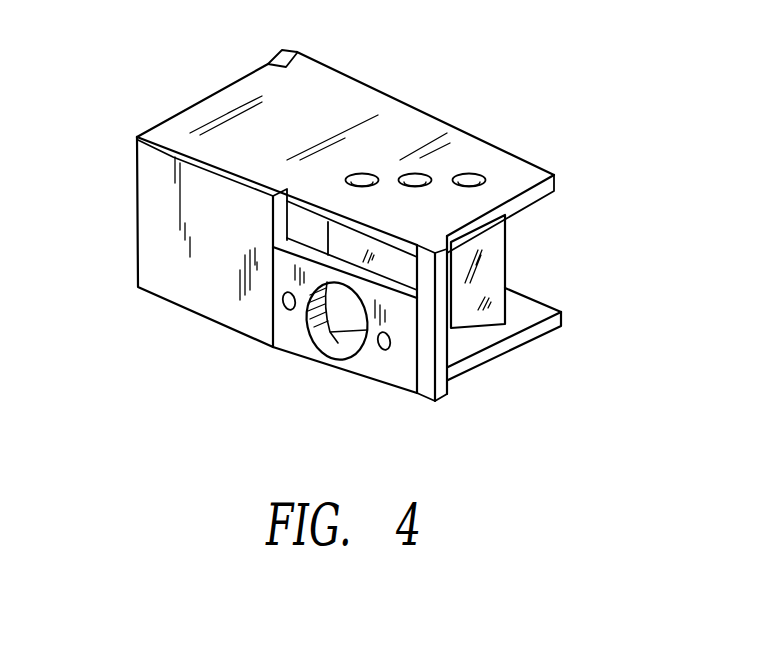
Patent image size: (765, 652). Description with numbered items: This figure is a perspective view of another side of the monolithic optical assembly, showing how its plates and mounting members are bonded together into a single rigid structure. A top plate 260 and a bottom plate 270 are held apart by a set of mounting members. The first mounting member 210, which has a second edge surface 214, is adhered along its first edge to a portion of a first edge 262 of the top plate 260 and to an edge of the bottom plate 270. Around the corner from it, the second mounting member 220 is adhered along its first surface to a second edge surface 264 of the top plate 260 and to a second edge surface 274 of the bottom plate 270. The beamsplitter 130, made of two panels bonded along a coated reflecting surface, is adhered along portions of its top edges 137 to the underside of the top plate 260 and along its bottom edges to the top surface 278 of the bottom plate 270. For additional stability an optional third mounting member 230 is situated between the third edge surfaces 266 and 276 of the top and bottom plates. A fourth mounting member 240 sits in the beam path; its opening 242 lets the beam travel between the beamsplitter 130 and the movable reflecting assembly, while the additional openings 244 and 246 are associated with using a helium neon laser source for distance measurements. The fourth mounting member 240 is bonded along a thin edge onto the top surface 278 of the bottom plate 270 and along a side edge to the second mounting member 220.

The first mounting member 210 is at (285, 44).
The second edge surface 214 is at (268, 65).
The top plate 260 is at (338, 95).
The first edge of top plate 262 is at (203, 99).
The third edge surface of top plate 266 is at (553, 190).
The top edges of beamsplitter 137 is at (468, 176).
The beamsplitter 130 is at (517, 239).
The second mounting member 220 is at (154, 257).
The second edge surface of top plate 264 is at (309, 203).
The fourth mounting member 240 is at (398, 392).
The opening 242 is at (330, 333).
The opening 244 is at (376, 352).
The opening 246 is at (282, 299).
The third mounting member 230 is at (442, 352).
The second edge surface of bottom plate 274 is at (421, 402).
The bottom plate 270 is at (563, 311).
The third edge surface of bottom plate 276 is at (512, 352).
The top surface of bottom plate 278 is at (522, 312).